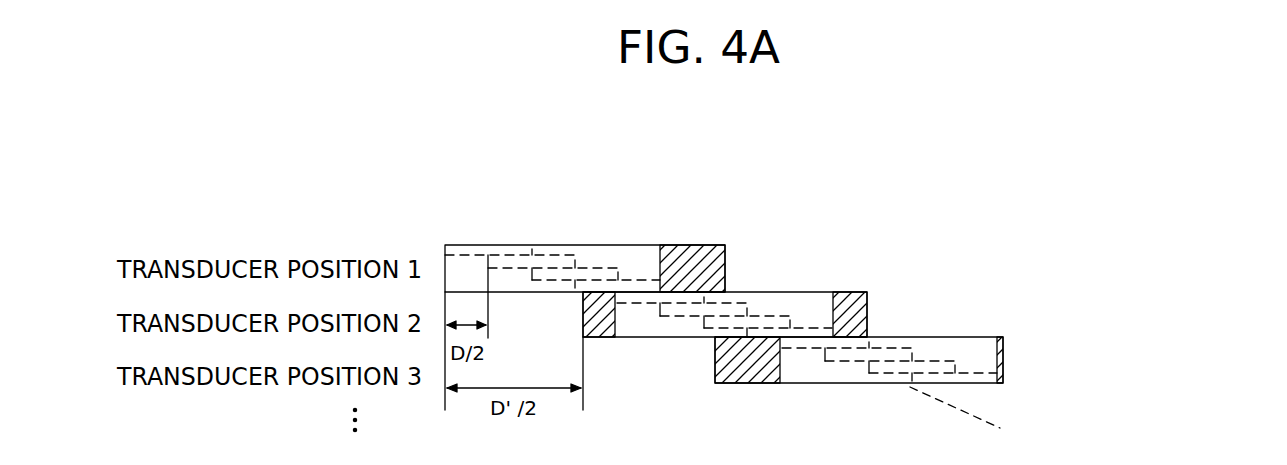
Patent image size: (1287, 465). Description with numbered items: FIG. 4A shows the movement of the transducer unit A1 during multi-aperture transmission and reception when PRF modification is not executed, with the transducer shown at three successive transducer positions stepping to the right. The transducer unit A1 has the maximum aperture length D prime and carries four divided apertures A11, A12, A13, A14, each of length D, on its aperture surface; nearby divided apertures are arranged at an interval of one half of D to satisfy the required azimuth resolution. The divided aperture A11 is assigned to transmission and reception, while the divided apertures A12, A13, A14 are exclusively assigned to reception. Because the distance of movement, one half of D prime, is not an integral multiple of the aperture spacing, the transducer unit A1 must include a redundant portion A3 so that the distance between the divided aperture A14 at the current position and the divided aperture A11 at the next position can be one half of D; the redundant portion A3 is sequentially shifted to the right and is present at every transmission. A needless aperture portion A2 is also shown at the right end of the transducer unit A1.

The divided aperture 1 A11 is at (487, 253).
The divided aperture 2 A12 is at (557, 257).
The divided aperture 3 A13 is at (608, 268).
The divided aperture 4 A14 is at (660, 280).
The transducer unit A1 is at (763, 290).
The needless aperture portion A2 is at (867, 337).
The redundant portion A3 is at (613, 338).